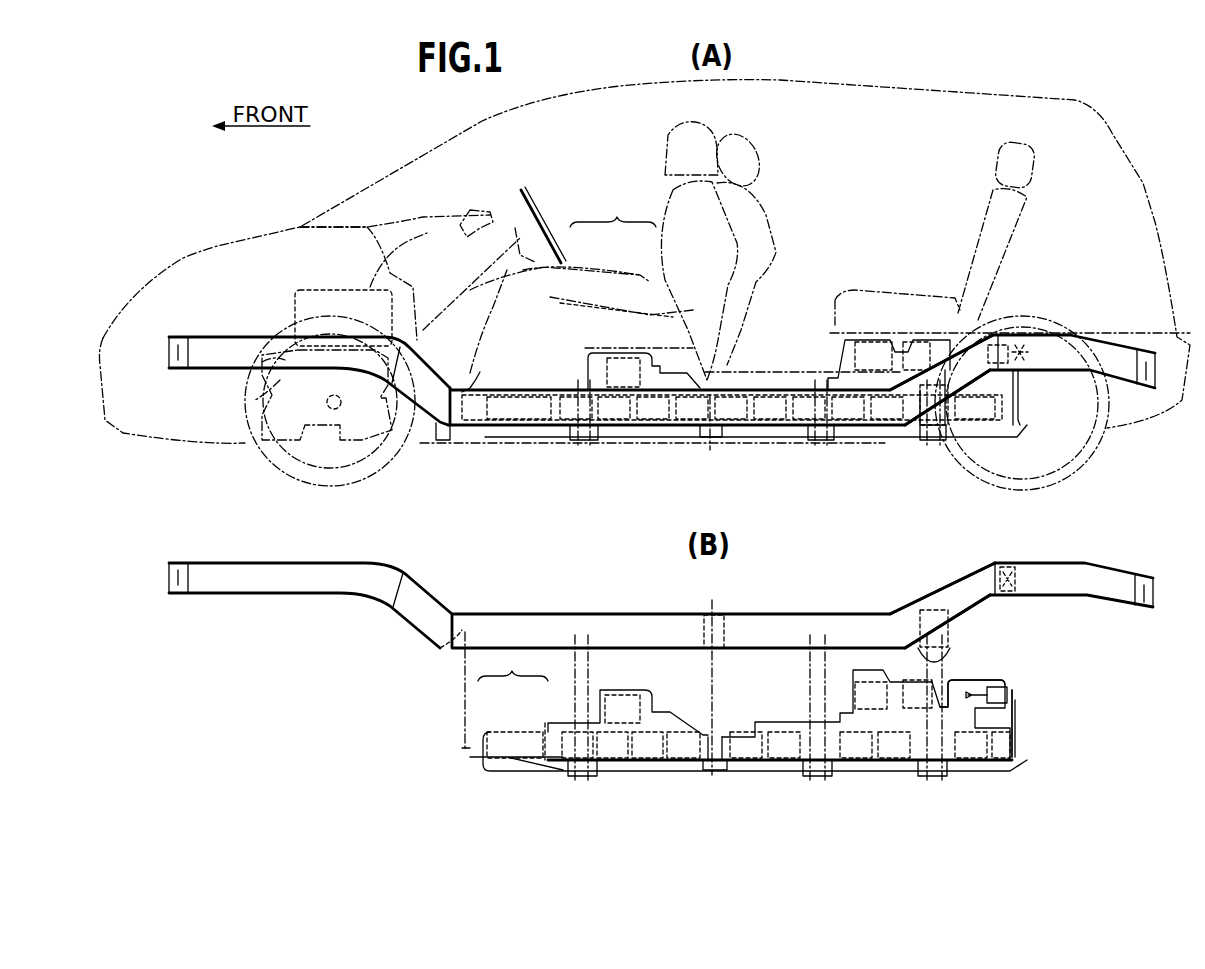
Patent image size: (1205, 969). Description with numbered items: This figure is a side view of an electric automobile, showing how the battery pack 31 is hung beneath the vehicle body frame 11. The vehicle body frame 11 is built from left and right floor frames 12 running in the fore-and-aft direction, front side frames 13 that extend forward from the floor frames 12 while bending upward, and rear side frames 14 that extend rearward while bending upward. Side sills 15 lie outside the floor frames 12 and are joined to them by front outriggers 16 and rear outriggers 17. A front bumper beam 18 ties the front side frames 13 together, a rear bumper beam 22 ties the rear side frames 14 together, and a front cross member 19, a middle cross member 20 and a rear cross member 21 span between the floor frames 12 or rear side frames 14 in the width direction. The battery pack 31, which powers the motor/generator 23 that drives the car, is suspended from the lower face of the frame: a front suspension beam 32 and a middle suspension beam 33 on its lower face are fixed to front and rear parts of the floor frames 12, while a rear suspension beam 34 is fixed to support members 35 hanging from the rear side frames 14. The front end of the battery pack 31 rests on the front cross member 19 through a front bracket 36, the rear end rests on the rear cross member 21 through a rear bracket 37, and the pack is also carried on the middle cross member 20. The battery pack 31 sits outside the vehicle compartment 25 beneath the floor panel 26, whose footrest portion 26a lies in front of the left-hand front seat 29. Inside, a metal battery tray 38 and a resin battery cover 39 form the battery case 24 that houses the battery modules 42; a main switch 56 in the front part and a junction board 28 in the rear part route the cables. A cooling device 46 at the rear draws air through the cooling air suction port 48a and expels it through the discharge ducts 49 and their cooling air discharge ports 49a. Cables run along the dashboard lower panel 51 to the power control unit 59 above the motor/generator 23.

The vehicle body frame 11 is at (492, 424).
The floor frames 12 is at (721, 491).
The front side frames 13 is at (245, 345).
The rear side frames 14 is at (1050, 348).
The side sills 15 is at (721, 491).
The front outriggers 16 is at (428, 372).
The rear outriggers 17 is at (927, 357).
The front bumper beam 18 is at (180, 368).
The front cross member 19 is at (437, 442).
The middle cross member 20 is at (682, 443).
The rear cross member 21 is at (1020, 335).
The rear bumper beam 22 is at (1146, 388).
The motor/generator 23 is at (335, 330).
The battery case 24 is at (568, 479).
The vehicle compartment 25 is at (846, 232).
The floor panel 26 is at (588, 327).
The footrest portion 26a is at (545, 388).
The junction board 28 is at (896, 345).
The left-hand front seat 29 is at (750, 255).
The battery pack 31 is at (758, 434).
The front suspension beam 32 is at (583, 442).
The middle suspension beam 33 is at (825, 442).
The rear suspension beam 34 is at (930, 442).
The support members 35 is at (948, 413).
The front bracket 36 is at (470, 370).
The rear bracket 37 is at (1020, 383).
The battery tray 38 is at (656, 422).
The battery cover 39 is at (584, 388).
The battery modules 42 is at (840, 385).
The cooling device 46 is at (1009, 684).
The cooling air suction port 48a is at (962, 666).
The discharge ducts 49 is at (982, 680).
The cooling air discharge ports 49a is at (1008, 697).
The dashboard lower panel 51 is at (428, 330).
The main switch 56 is at (622, 350).
The power control unit 59 is at (385, 250).